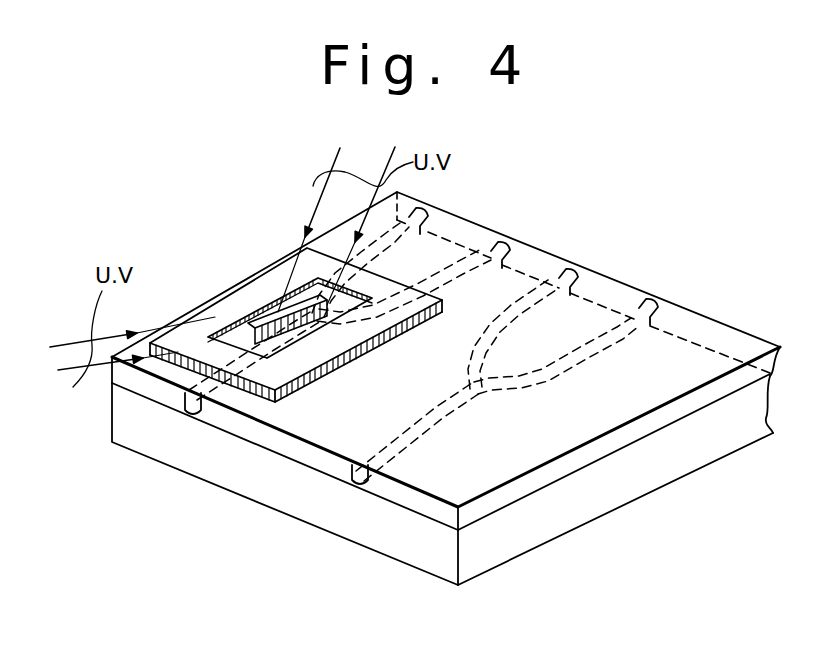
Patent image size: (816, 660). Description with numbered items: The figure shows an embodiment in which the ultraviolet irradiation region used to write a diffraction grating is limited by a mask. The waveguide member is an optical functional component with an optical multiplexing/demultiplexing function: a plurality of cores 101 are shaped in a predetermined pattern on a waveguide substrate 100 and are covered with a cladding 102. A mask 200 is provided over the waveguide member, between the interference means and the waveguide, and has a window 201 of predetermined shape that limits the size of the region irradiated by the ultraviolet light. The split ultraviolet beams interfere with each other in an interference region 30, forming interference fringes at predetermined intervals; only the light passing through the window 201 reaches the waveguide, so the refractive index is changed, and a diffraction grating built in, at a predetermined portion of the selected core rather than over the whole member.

The waveguide substrate 100 is at (610, 500).
The cores 101 is at (353, 482).
The cladding 102 is at (407, 500).
The interference region 30 is at (315, 328).
The mask 200 is at (243, 297).
The window 201 is at (283, 305).